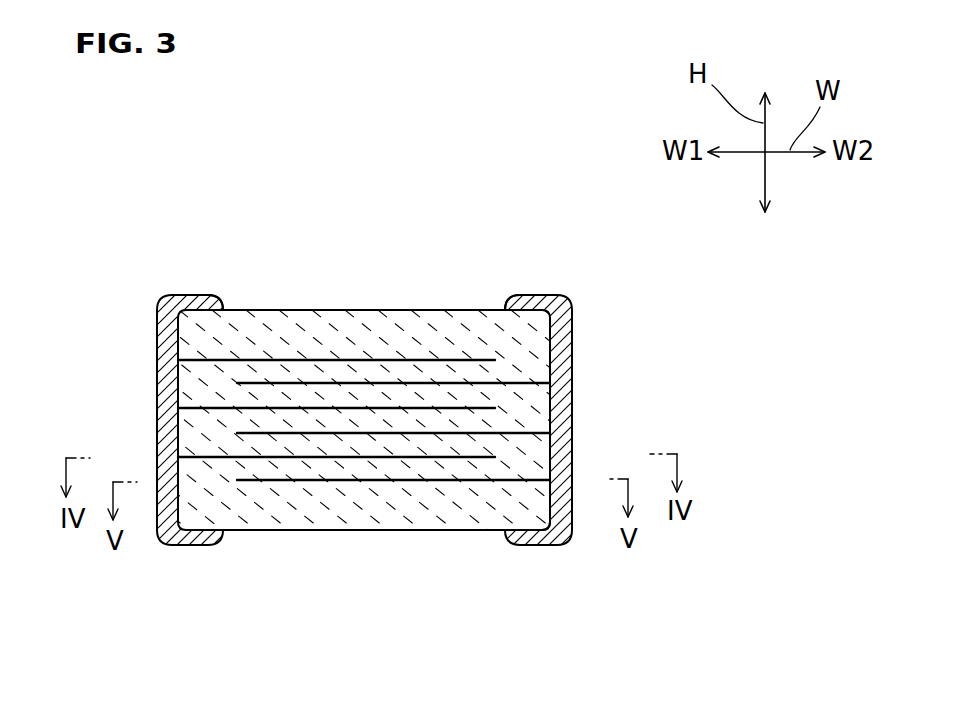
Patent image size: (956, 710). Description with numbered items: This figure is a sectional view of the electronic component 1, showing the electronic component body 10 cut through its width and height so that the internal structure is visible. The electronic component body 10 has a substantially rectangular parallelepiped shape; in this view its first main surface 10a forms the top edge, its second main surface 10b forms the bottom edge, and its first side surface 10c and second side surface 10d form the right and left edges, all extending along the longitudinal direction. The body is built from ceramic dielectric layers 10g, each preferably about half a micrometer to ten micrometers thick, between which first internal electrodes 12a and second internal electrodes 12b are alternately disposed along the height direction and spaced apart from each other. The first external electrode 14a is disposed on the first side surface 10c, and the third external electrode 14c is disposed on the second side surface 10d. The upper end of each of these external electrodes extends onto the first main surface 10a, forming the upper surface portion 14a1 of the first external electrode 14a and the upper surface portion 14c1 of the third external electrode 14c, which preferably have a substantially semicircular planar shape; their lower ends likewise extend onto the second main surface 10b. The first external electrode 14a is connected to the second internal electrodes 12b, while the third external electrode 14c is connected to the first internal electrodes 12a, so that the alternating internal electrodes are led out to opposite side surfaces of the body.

The electronic component 1 is at (461, 222).
The electronic component body 10 is at (292, 308).
The first main surface 10a is at (258, 310).
The second main surface 10b is at (262, 532).
The first side surface 10c is at (551, 498).
The second side surface 10d is at (178, 352).
The ceramic dielectric layer 10g is at (345, 468).
The first internal electrode 12a is at (362, 358).
The second internal electrode 12b is at (422, 482).
The first external electrode 14a is at (573, 347).
The upper surface portion 14a1 is at (530, 297).
The third external electrode 14c is at (157, 405).
The upper surface portion 14c1 is at (192, 298).